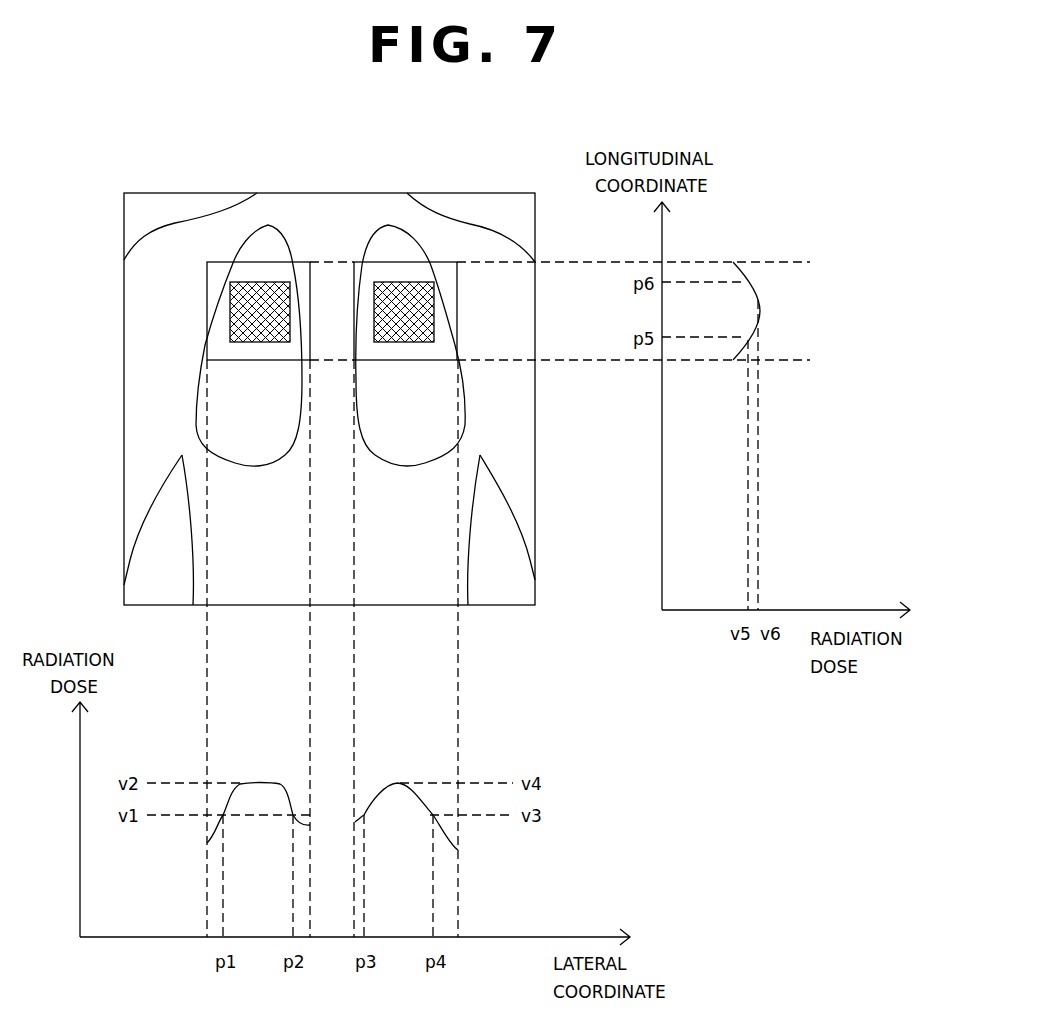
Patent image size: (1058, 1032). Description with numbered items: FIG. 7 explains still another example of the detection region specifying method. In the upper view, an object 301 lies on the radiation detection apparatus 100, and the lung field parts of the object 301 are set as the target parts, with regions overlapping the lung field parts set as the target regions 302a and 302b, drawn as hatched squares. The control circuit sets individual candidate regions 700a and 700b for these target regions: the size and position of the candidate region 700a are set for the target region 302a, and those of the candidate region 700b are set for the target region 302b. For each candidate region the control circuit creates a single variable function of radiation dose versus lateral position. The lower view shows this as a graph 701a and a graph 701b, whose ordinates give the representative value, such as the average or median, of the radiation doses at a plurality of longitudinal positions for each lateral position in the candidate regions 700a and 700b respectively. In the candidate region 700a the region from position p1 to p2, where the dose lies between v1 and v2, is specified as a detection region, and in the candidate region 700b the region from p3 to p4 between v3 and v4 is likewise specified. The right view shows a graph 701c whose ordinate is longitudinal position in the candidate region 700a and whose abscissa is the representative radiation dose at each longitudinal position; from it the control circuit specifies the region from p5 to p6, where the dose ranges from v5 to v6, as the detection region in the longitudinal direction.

The radiation detection apparatus 100 is at (467, 192).
The object 301 is at (150, 232).
The target region 302a is at (255, 282).
The target region 302b is at (400, 282).
The candidate region 700a is at (207, 301).
The candidate region 700b is at (457, 305).
The graph 701a is at (241, 783).
The graph 701b is at (383, 785).
The graph 701c is at (737, 265).